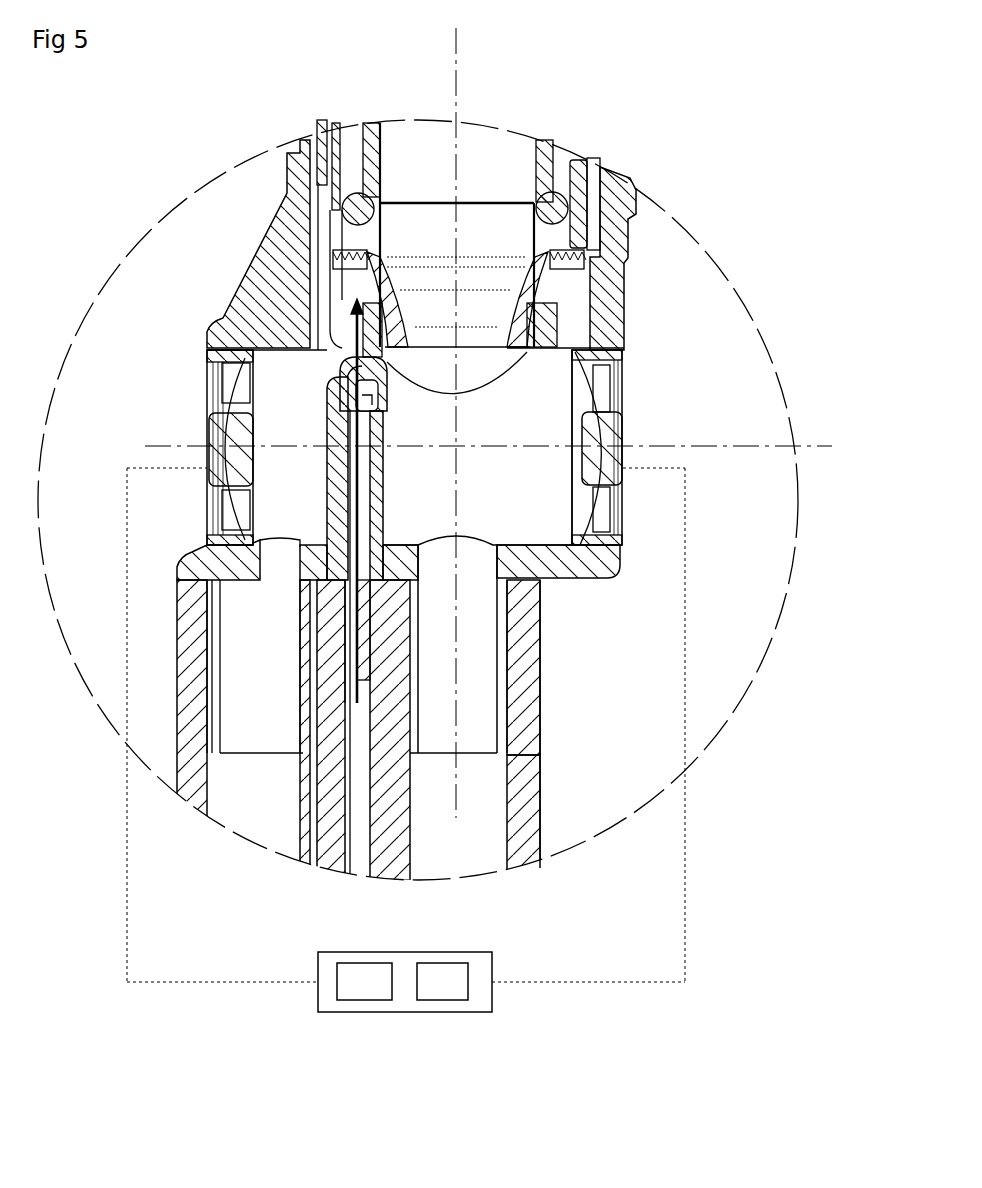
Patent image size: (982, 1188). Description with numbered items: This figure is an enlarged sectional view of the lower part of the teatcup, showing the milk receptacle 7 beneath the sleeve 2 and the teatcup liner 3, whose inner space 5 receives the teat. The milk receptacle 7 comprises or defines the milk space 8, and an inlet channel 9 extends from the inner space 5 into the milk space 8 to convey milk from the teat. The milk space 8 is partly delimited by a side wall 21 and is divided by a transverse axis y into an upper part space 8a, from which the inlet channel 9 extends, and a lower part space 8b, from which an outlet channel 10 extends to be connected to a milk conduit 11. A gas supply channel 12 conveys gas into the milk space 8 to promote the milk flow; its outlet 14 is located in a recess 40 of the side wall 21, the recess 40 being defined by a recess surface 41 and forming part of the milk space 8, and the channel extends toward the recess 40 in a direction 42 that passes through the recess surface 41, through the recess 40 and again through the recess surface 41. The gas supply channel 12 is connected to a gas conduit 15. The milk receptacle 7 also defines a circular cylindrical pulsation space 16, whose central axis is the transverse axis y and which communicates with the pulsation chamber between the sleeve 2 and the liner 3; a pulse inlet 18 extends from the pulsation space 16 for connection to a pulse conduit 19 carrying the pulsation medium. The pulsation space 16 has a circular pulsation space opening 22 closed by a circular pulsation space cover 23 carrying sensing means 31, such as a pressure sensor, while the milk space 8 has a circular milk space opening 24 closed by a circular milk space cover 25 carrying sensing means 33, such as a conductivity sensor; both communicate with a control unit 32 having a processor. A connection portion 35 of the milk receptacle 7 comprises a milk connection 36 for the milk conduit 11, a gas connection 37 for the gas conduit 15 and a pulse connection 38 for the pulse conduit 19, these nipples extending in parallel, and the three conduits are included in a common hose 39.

The sleeve 2 is at (583, 192).
The teatcup liner 3 is at (290, 150).
The inner space 5 is at (440, 176).
The milk receptacle 7 is at (275, 248).
The milk space 8 is at (501, 436).
The upper part space 8a is at (553, 390).
The lower part space 8b is at (553, 517).
The inlet channel 9 is at (492, 316).
The outlet channel 10 is at (455, 702).
The milk conduit 11 is at (483, 837).
The gas supply channel 12 is at (353, 477).
The outlet 14 is at (347, 407).
The gas conduit 15 is at (355, 827).
The pulsation space 16 is at (315, 486).
The pulse inlet 18 is at (190, 766).
The pulse conduit 19 is at (263, 805).
The side wall 21 is at (375, 492).
The pulsation space opening 22 is at (231, 346).
The pulsation space cover 23 is at (240, 356).
The milk space opening 24 is at (607, 353).
The milk space cover 25 is at (620, 400).
The sensing means 31 is at (221, 414).
The control unit 32 is at (473, 963).
The sensing means 33 is at (608, 458).
The connection portion 35 is at (615, 581).
The milk connection 36 is at (517, 648).
The gas connection 37 is at (372, 637).
The pulse connection 38 is at (185, 598).
The common hose 39 is at (532, 790).
The recess 40 is at (362, 393).
The recess surface 41 is at (377, 373).
The direction 42 is at (357, 430).
The transverse axis y is at (760, 447).